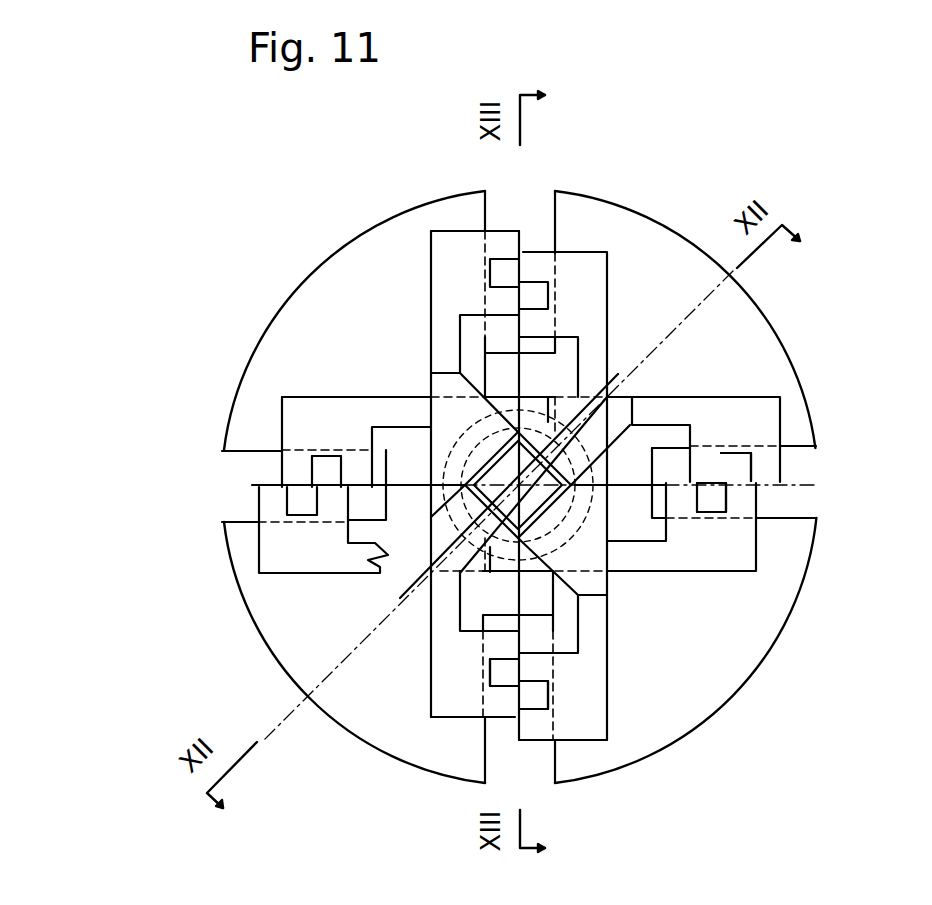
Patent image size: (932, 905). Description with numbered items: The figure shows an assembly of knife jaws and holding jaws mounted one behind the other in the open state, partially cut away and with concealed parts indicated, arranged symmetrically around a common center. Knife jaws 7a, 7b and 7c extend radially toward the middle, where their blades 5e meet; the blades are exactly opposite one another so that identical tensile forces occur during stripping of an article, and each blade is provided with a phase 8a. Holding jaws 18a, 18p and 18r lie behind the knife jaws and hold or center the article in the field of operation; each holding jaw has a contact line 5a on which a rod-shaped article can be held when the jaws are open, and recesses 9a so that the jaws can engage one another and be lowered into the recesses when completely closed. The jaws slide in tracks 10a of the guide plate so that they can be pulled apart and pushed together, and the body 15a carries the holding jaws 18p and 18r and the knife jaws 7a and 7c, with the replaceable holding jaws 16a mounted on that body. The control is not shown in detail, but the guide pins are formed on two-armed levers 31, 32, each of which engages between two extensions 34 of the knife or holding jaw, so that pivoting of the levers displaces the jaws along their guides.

The contact line 5a is at (500, 425).
The blade 5e is at (608, 395).
The knife jaw 7a is at (593, 252).
The knife jaw 7b is at (522, 568).
The knife jaw 7c is at (428, 538).
The phase 8a is at (400, 598).
The recess 9a is at (475, 342).
The track 10a is at (493, 622).
The body 15a is at (753, 413).
The replaceable holding jaw 16a is at (622, 410).
The holding jaw 18a is at (427, 445).
The holding jaw 18p is at (782, 430).
The holding jaw 18r is at (255, 545).
The two-armed lever 31 is at (540, 693).
The two-armed lever 32 is at (750, 502).
The extension 34 is at (300, 468).